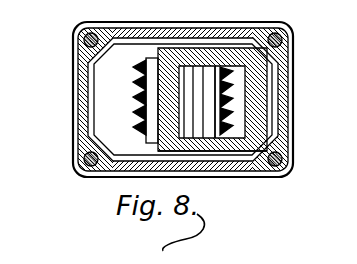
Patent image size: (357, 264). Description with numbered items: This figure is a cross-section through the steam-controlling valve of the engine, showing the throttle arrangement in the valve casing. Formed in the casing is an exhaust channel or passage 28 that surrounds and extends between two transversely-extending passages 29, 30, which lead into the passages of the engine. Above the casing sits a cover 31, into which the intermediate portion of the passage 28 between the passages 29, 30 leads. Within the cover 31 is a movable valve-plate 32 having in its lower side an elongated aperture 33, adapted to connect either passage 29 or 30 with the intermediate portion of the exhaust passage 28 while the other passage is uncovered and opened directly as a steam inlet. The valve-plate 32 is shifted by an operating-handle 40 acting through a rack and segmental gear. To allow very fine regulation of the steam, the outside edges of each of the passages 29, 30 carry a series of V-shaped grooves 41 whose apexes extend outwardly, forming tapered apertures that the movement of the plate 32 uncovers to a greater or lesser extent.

The exhaust channel or passage 28 is at (162, 63).
The transversely-extending passage 29 is at (152, 88).
The transversely-extending passage 30 is at (210, 127).
The cover 31 is at (283, 140).
The movable valve-plate 32 is at (255, 114).
The elongated aperture 33 is at (205, 78).
The operating-handle 40 is at (141, 110).
The V-shaped grooves 41 is at (229, 101).